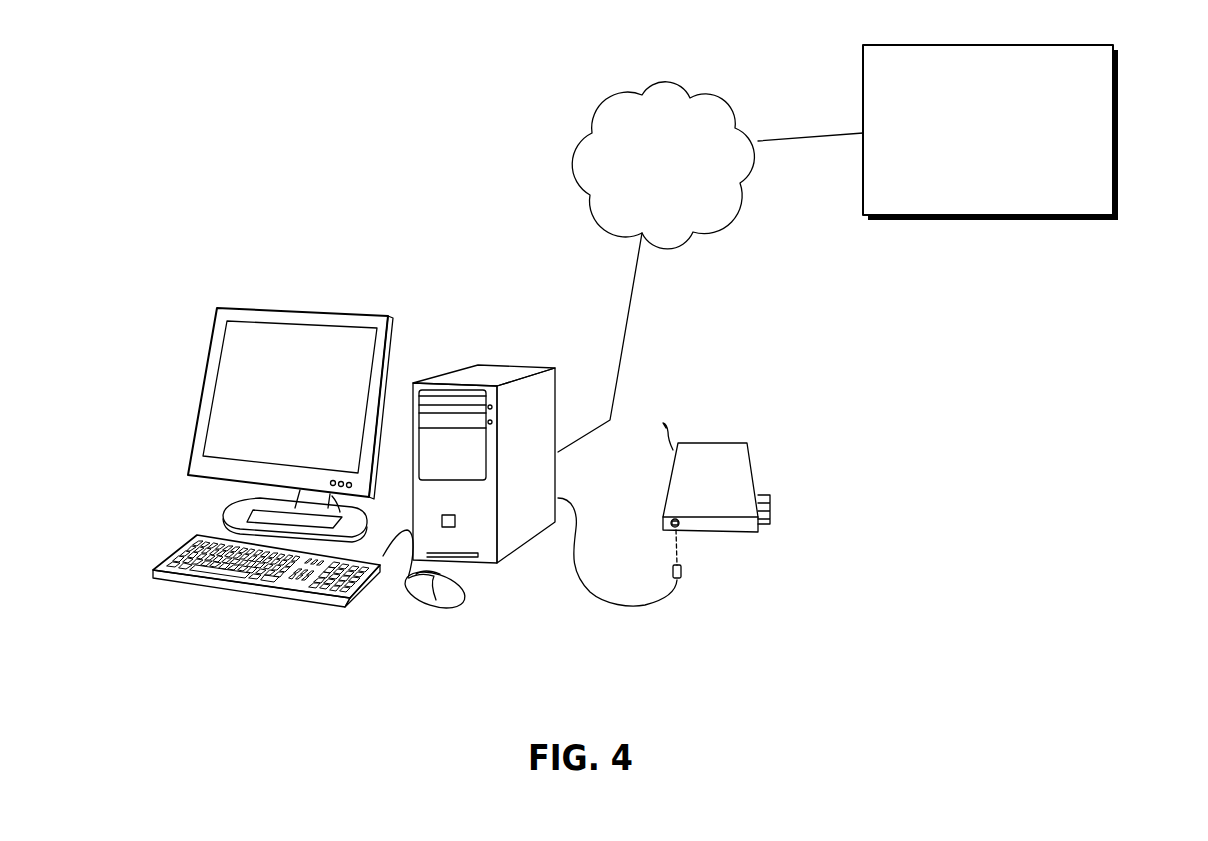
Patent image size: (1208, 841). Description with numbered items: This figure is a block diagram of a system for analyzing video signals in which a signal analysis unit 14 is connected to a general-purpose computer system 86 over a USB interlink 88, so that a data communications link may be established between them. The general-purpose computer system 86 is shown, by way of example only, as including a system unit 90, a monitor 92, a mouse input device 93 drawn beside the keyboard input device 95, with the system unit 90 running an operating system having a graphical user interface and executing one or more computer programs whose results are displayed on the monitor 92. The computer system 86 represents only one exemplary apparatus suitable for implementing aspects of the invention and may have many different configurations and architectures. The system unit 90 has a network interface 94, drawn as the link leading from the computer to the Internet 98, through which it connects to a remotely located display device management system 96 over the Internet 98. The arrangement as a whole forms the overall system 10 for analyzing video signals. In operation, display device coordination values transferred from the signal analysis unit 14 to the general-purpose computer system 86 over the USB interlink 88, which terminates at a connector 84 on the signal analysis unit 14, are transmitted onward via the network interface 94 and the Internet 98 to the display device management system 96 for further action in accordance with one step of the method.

The display device management system 10 is at (891, 475).
The signal analysis unit 14 is at (744, 452).
The connector port 84 is at (680, 528).
The general-purpose computer system 86 is at (375, 612).
The USB interlink 88 is at (645, 608).
The system unit 90 is at (495, 373).
The monitor 92 is at (367, 312).
The mouse 93 is at (453, 597).
The mouse input device 94 is at (626, 346).
The keyboard 95 is at (248, 585).
The keyboard input device 96 is at (1119, 148).
The Internet 98 is at (651, 200).